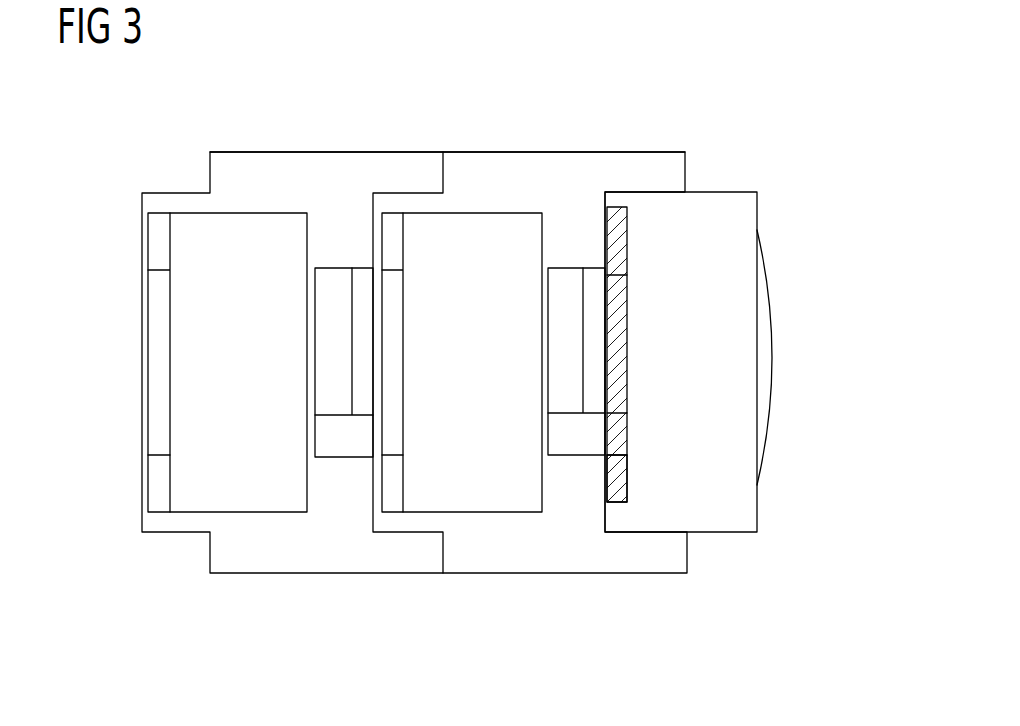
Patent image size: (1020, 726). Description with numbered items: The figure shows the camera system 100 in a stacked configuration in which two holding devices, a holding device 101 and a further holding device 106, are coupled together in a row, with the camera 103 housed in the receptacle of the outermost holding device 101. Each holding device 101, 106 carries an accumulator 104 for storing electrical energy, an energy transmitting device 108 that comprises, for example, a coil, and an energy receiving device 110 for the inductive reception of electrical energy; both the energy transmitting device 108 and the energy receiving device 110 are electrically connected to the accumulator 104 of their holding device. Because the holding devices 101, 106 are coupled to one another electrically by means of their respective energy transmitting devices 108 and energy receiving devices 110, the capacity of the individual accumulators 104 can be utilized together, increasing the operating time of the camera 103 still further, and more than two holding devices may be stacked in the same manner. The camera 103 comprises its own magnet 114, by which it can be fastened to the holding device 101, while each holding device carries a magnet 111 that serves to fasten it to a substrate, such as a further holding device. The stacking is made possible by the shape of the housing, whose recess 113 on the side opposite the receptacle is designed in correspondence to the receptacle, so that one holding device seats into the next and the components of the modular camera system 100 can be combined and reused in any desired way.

The camera system 100 is at (788, 43).
The holding device 101 is at (487, 178).
The camera 103 is at (720, 210).
The accumulator 104 is at (242, 458).
The further holding device 106 is at (407, 173).
The energy transmitting device 108 is at (334, 293).
The energy receiving device 110 is at (161, 393).
The magnet 111 is at (160, 490).
The recess 113 is at (175, 176).
The magnet 114 is at (623, 492).